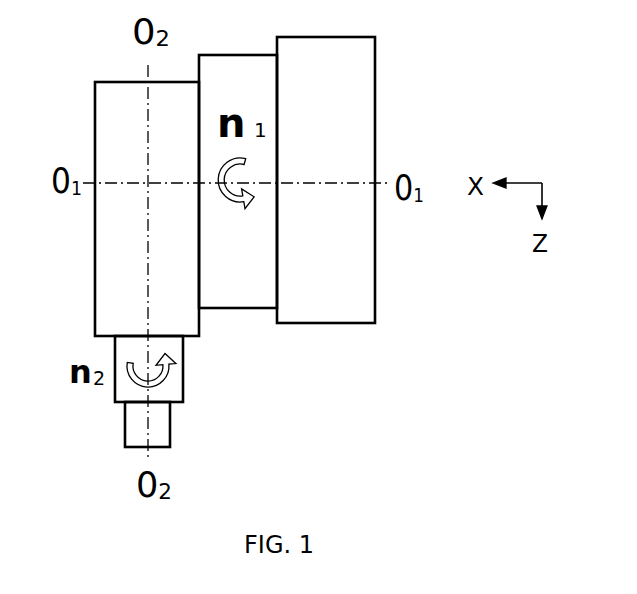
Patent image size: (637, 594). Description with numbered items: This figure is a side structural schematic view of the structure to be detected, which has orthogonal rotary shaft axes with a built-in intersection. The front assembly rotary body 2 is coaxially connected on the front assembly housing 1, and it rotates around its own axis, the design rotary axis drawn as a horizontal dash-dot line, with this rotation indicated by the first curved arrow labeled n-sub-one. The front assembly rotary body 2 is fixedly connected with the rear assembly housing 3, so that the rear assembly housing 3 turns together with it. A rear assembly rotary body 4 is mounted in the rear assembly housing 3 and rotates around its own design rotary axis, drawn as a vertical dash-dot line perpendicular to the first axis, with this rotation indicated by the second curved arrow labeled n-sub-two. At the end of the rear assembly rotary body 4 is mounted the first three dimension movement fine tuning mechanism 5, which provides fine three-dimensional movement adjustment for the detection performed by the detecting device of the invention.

The front assembly housing 1 is at (340, 248).
The front assembly rotary body 2 is at (227, 298).
The rear assembly housing 3 is at (170, 317).
The rear assembly rotary body 4 is at (170, 352).
The first three dimension movement fine tuning mechanism 5 is at (160, 410).